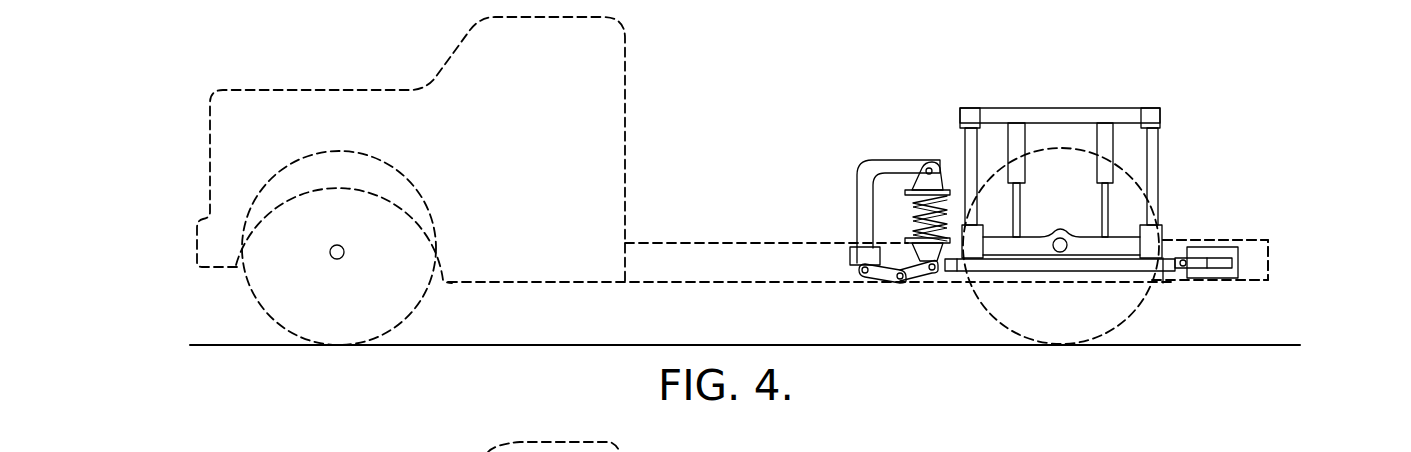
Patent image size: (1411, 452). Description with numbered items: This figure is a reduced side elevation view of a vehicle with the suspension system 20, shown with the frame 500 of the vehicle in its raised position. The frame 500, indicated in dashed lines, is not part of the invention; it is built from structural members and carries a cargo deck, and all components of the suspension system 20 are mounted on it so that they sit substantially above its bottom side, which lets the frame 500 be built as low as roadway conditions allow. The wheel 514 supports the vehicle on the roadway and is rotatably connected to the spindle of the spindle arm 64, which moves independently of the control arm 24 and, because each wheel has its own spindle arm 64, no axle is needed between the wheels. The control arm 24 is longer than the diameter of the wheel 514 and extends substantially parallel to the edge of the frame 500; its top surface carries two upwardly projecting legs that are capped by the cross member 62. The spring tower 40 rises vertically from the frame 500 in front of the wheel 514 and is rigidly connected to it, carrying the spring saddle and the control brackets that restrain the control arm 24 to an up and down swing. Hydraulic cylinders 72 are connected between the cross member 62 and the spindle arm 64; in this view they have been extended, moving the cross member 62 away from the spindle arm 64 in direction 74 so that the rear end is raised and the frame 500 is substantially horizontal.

The suspension system 20 is at (1242, 112).
The control arm 24 is at (1173, 272).
The spring tower 40 is at (857, 215).
The cross member 62 is at (1084, 108).
The spindle arm 64 is at (1117, 247).
The hydraulic cylinder 72 is at (1007, 137).
The direction 74 is at (1077, 218).
The frame 500 is at (1270, 270).
The wheel 514 is at (977, 302).